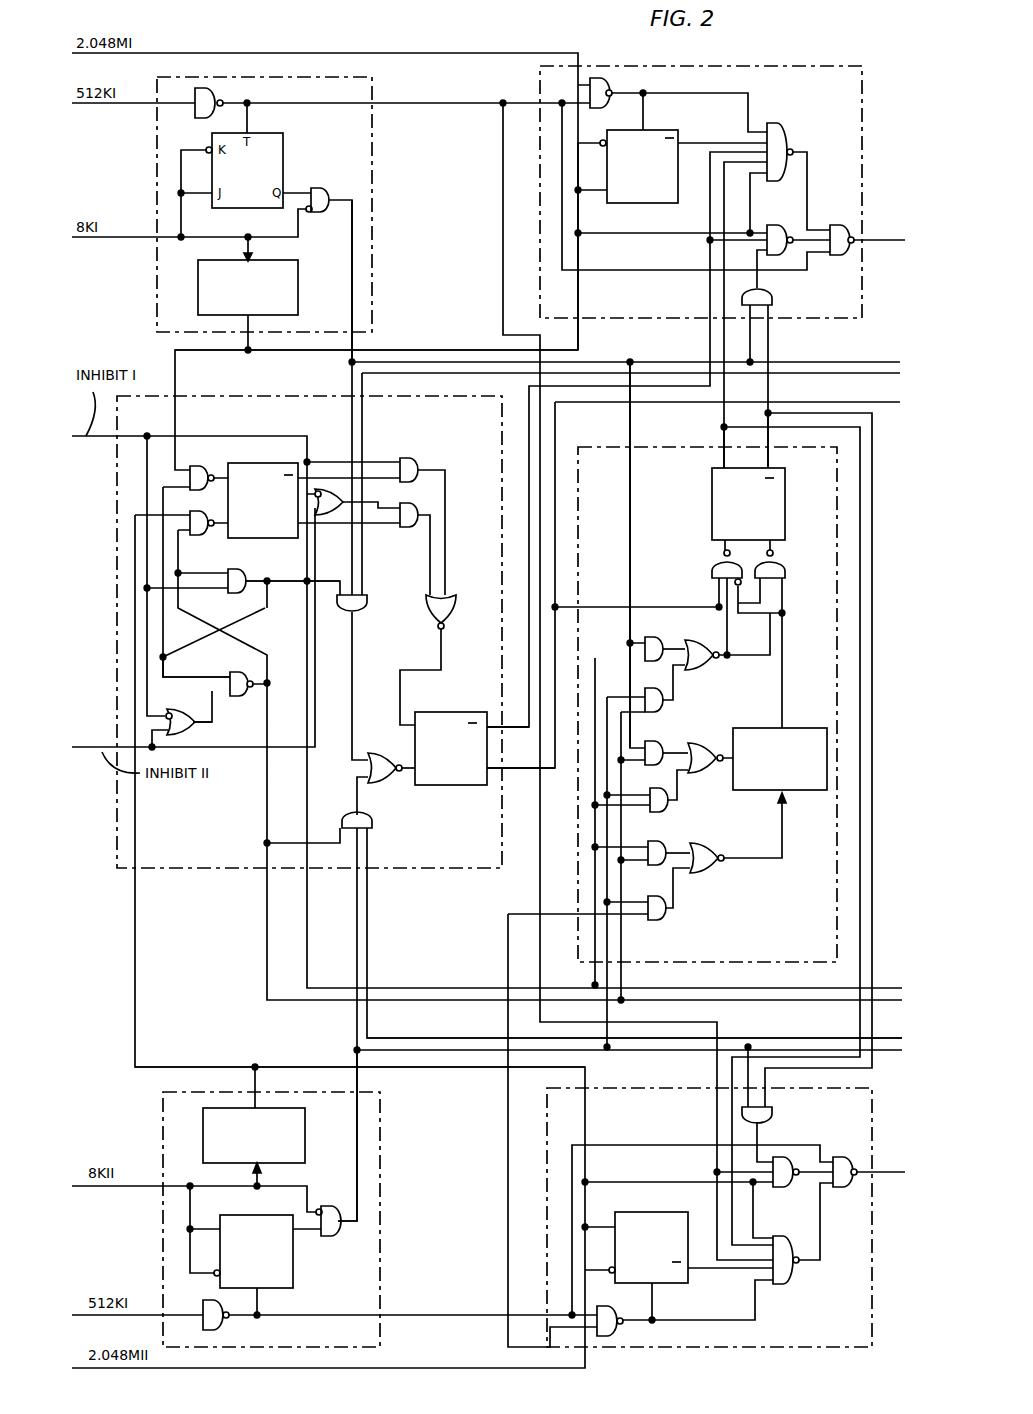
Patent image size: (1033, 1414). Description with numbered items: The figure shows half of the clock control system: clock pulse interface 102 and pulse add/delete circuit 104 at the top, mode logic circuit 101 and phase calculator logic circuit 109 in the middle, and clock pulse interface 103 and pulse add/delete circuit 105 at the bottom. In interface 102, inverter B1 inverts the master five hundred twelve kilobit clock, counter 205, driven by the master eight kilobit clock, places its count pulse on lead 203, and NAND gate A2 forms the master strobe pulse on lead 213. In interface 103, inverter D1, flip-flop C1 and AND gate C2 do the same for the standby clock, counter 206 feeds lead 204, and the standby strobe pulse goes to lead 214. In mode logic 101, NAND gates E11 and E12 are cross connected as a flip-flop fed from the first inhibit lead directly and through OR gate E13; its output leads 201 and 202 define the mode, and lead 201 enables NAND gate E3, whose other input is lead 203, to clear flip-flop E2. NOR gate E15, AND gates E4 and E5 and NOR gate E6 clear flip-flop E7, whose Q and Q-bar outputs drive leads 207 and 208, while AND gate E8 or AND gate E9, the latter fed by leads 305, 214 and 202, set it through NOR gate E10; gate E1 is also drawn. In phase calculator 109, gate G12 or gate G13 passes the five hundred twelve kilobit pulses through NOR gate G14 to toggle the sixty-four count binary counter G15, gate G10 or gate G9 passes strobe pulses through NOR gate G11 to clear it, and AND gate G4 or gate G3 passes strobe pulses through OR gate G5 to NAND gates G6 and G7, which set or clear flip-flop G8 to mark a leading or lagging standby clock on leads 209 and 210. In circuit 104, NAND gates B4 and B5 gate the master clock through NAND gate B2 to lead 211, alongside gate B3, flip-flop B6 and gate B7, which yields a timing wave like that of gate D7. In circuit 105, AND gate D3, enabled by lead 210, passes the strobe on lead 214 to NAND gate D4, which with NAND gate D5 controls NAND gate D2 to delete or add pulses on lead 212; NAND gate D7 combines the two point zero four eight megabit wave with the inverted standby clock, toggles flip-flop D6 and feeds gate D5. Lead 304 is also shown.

The mode logic circuit 101 is at (309, 632).
The clock pulse interface 102 is at (372, 192).
The clock pulse interface circuit 103 is at (380, 1212).
The pulse add/delete circuit 104 is at (701, 192).
The pulse add/delete circuit 105 is at (709, 1217).
The phase calculator logic circuit 109 is at (707, 704).
The output lead 201 is at (282, 595).
The output lead 202 is at (250, 670).
The lead 203 is at (272, 352).
The lead 204 is at (296, 1066).
The counter 205 is at (298, 290).
The counter 206 is at (305, 1130).
The lead 207 is at (492, 778).
The lead 208 is at (492, 712).
The lead 209 is at (718, 458).
The lead 210 is at (774, 458).
The lead 211 is at (858, 250).
The lead 212 is at (862, 1178).
The lead 213 is at (327, 212).
The lead 214 is at (352, 1165).
The control line 304 is at (826, 375).
The lead 305 is at (832, 1036).
The NAND gate A2 is at (320, 191).
The inverter B1 is at (212, 100).
The NAND gate B2 is at (840, 226).
The AND gate B3 is at (774, 296).
The NAND gate B4 is at (788, 228).
The NAND gate B5 is at (781, 165).
The JK flip-flop B6 is at (650, 130).
The NAND gate B7 is at (604, 86).
The flip-flop C1 is at (296, 1280).
The AND gate C2 is at (334, 1236).
The inverter D1 is at (222, 1330).
The NAND gate D2 is at (846, 1156).
The AND gate D3 is at (776, 1116).
The NAND gate D4 is at (790, 1188).
The NAND gate D5 is at (792, 1244).
The flip-flop D6 is at (634, 1212).
The NAND gate D7 is at (614, 1334).
The NAND gate E1 is at (205, 513).
The flip-flop E2 is at (243, 464).
The NAND gate E3 is at (204, 468).
The AND gate E4 is at (408, 528).
The gate E5 is at (406, 457).
The NOR gate E6 is at (454, 616).
The flip-flop E7 is at (436, 710).
The AND gate E8 is at (366, 612).
The AND gate E9 is at (346, 816).
The NOR gate E10 is at (384, 756).
The NAND gate E11 is at (240, 696).
The NAND gate E12 is at (236, 573).
The OR gate E13 is at (182, 710).
The NOR gate E15 is at (338, 517).
The gate G3 is at (658, 694).
The AND gate G4 is at (662, 637).
The OR gate G5 is at (710, 664).
The NAND gate G6 is at (708, 572).
The NAND gate G7 is at (786, 570).
The flip-flop G8 is at (786, 490).
The gate G9 is at (660, 746).
The gate G10 is at (658, 788).
The NOR gate G11 is at (704, 746).
The gate G12 is at (660, 842).
The gate G13 is at (658, 920).
The NOR gate G14 is at (706, 844).
The binary counter G15 is at (802, 727).